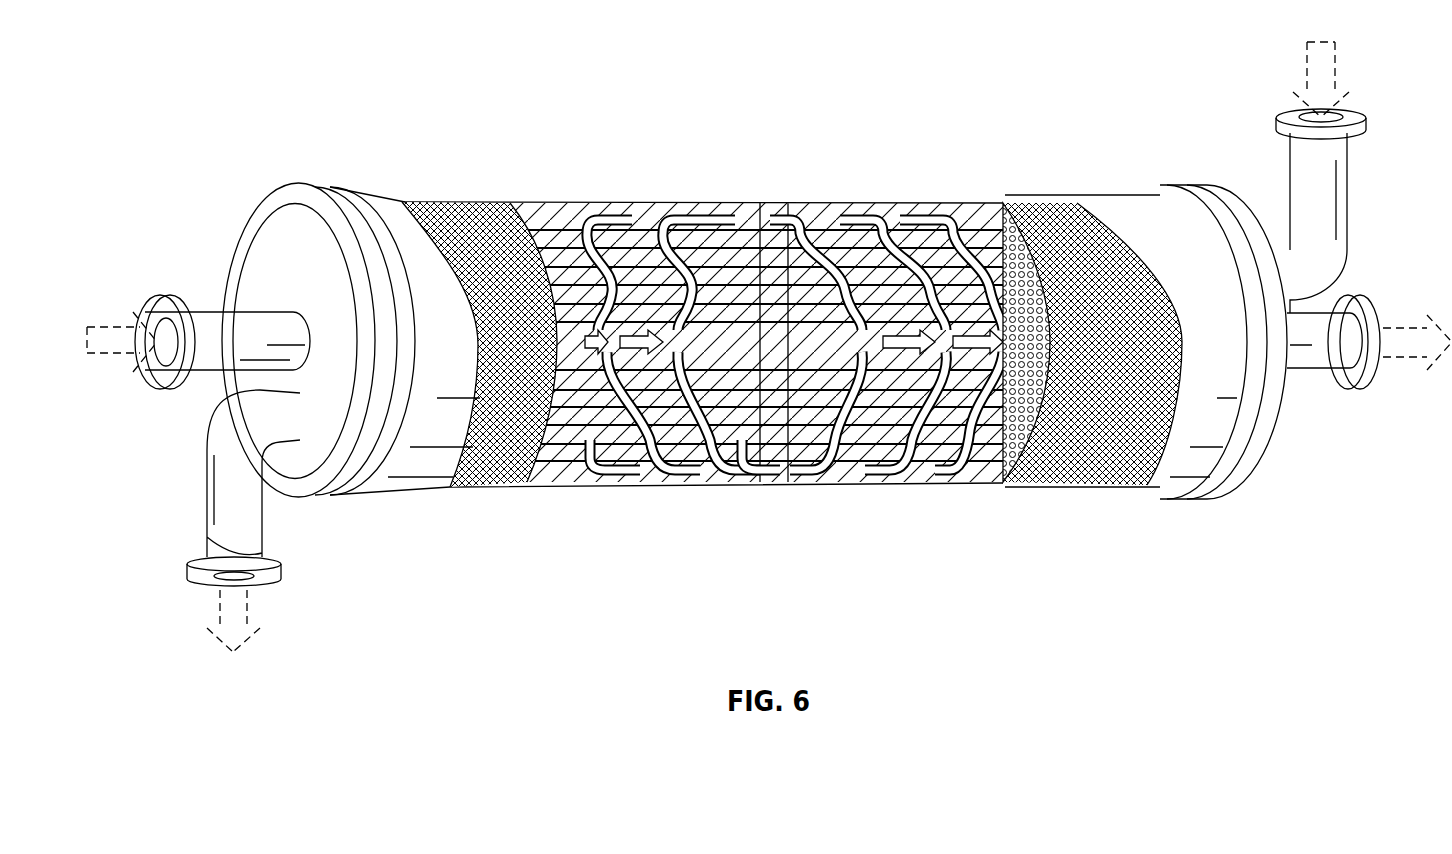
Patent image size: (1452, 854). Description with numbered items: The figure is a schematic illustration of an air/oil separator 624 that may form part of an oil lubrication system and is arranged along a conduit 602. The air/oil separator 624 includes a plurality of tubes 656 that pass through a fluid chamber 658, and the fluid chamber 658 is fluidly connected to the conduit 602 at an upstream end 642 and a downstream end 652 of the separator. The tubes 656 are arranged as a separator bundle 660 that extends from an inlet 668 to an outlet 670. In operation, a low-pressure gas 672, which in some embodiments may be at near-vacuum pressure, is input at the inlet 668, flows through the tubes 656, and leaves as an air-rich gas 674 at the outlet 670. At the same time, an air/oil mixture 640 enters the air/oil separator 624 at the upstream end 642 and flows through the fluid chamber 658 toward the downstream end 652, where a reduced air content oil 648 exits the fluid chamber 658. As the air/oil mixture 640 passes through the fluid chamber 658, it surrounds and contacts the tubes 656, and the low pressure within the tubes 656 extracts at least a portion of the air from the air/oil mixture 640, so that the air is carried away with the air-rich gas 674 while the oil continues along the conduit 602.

The upstream end 642 is at (190, 113).
The air/oil separator 624 is at (390, 207).
The downstream end 652 is at (1263, 507).
The conduit 602 is at (208, 310).
The air/oil mixture 640 is at (123, 325).
The reduced air content oil 648 is at (1412, 323).
The tubes 656 is at (733, 210).
The fluid chamber 658 is at (703, 453).
The separator bundle 660 is at (1033, 447).
The inlet 668 is at (1340, 180).
The low-pressure gas 672 is at (1307, 67).
The outlet 670 is at (205, 480).
The air-rich gas 674 is at (248, 600).